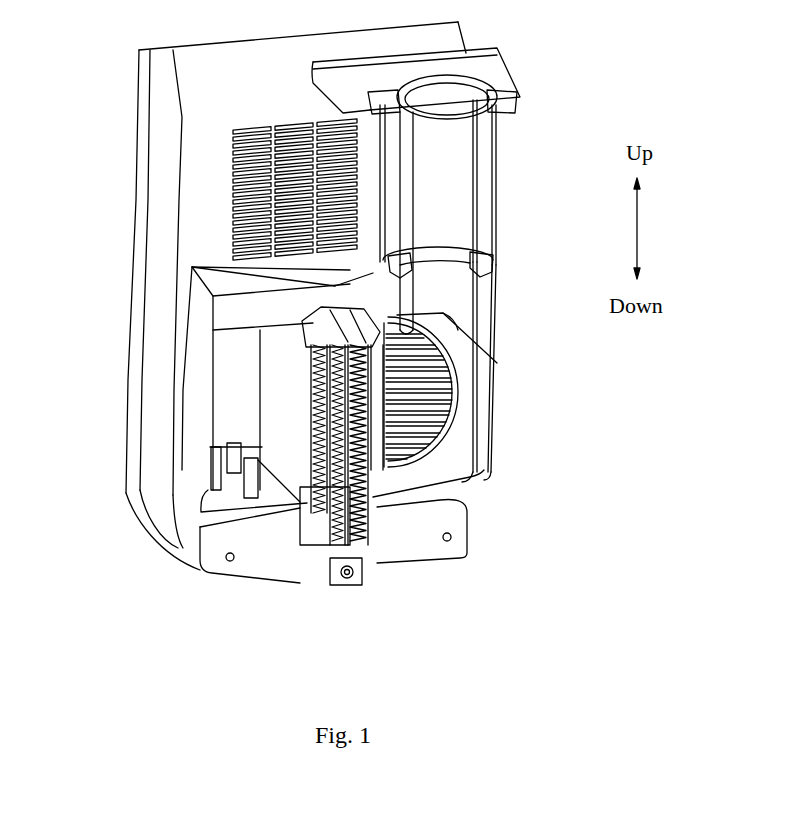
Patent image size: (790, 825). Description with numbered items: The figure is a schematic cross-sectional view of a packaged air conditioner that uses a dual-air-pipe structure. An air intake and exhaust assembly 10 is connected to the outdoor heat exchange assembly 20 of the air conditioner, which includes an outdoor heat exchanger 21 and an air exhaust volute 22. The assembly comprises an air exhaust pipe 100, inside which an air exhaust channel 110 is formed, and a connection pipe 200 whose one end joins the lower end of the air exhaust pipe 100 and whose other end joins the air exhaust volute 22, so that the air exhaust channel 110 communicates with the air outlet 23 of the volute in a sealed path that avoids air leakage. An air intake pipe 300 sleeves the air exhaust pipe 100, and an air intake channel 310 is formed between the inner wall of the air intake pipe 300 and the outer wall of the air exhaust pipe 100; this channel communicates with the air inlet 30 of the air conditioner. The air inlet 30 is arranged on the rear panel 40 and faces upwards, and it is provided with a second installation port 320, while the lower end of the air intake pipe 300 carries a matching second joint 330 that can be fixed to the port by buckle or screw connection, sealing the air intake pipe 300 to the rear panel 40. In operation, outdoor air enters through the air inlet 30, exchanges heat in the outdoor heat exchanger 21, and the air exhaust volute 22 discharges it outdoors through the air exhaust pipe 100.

The air intake and exhaust assembly 10 is at (527, 57).
The outdoor heat exchange assembly 20 is at (528, 478).
The outdoor heat exchanger 21 is at (370, 477).
The air exhaust volute 22 is at (420, 432).
The air outlet 23 is at (440, 315).
The air inlet 30 is at (300, 308).
The rear panel 40 is at (305, 277).
The air exhaust pipe 100 is at (472, 184).
The air exhaust channel 110 is at (458, 157).
The connection pipe 200 is at (473, 300).
The air intake pipe 300 is at (493, 217).
The air intake channel 310 is at (493, 250).
The second installation port 320 is at (235, 155).
The second joint 330 is at (372, 262).